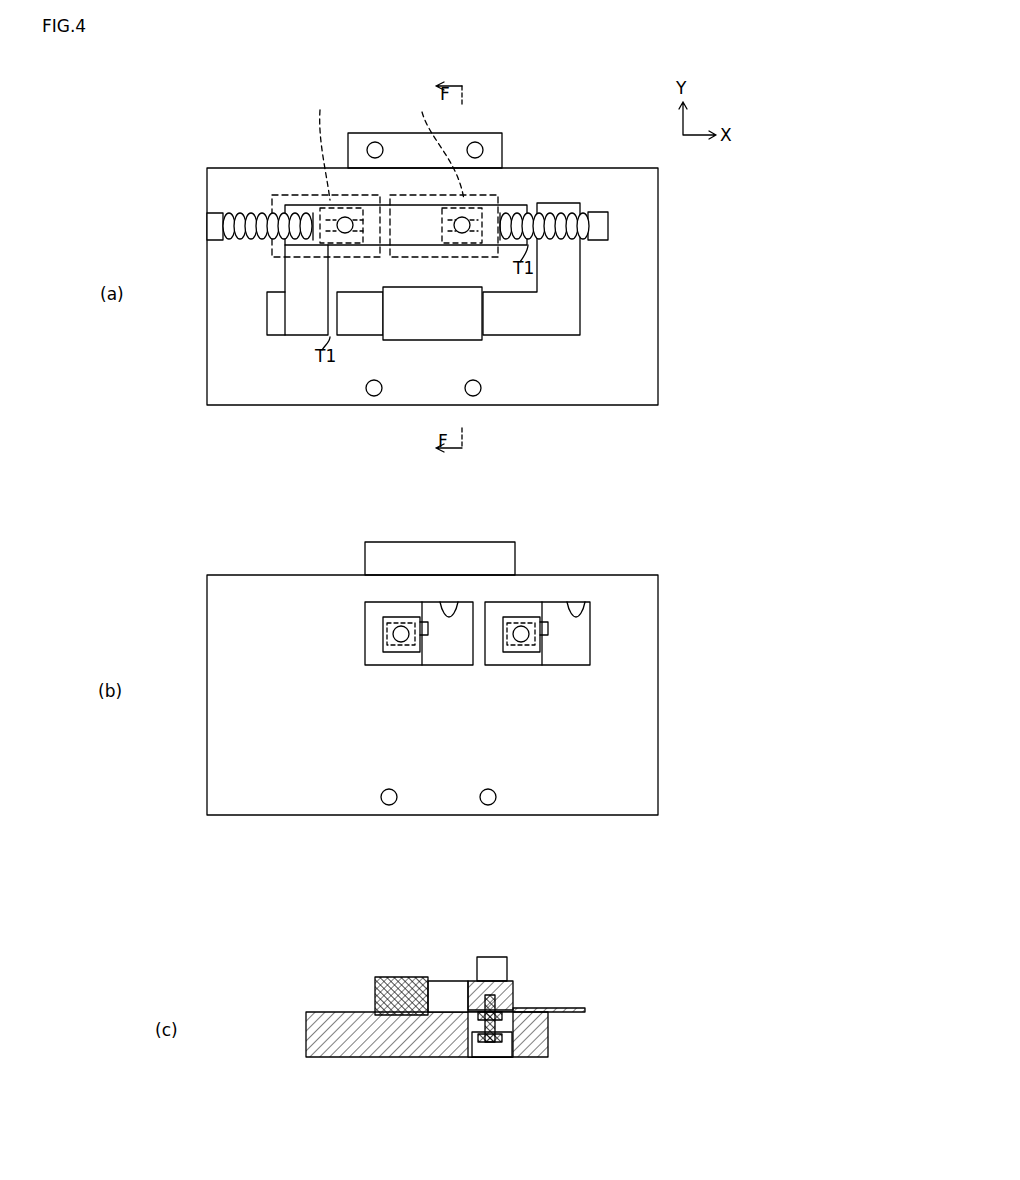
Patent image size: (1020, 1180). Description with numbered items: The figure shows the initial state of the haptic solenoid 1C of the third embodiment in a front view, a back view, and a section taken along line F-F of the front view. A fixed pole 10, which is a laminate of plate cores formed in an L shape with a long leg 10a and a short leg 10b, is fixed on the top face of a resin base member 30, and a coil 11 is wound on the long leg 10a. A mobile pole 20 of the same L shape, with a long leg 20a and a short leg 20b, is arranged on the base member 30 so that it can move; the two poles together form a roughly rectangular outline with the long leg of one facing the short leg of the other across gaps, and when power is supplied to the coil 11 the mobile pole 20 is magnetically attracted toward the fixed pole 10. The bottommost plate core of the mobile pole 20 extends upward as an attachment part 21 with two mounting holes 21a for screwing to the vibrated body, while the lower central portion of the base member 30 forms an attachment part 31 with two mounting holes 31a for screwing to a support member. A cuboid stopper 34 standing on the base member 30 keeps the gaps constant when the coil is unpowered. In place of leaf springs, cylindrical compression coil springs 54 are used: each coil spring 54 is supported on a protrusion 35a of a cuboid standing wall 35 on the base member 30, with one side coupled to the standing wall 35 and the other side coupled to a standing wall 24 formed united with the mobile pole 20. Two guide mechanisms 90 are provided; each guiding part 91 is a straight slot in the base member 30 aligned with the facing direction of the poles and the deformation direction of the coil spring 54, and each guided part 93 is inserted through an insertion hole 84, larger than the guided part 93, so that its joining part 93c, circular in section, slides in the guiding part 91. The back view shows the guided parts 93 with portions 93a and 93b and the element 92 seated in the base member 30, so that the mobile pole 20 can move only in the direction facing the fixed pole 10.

The haptic solenoid 1C is at (636, 158).
The fixed pole 10 is at (566, 345).
The long leg 10a is at (522, 317).
The short leg 10b is at (575, 270).
The coil 11 is at (410, 330).
The mobile pole 20 is at (280, 275).
The long leg 20a is at (513, 985).
The short leg 20b is at (308, 345).
The attachment part 21 is at (393, 140).
The mounting hole 21a is at (375, 150).
The standing wall 24 is at (312, 220).
The base member 30 is at (670, 302).
The attachment part 31 is at (422, 390).
The mounting hole 31a is at (372, 394).
The stopper 34 is at (275, 330).
The standing wall 35 is at (213, 225).
The protrusion 35a is at (237, 225).
The coil spring 54 is at (255, 220).
The insertion hole 84 is at (452, 612).
The guide mechanism 90 is at (385, 145).
The guiding part 91 is at (426, 625).
The contact 92 is at (505, 1030).
The guided part 93 is at (518, 1067).
The pin head 93a is at (390, 618).
The pin flange 93b is at (515, 618).
The joining part 93c is at (487, 1035).